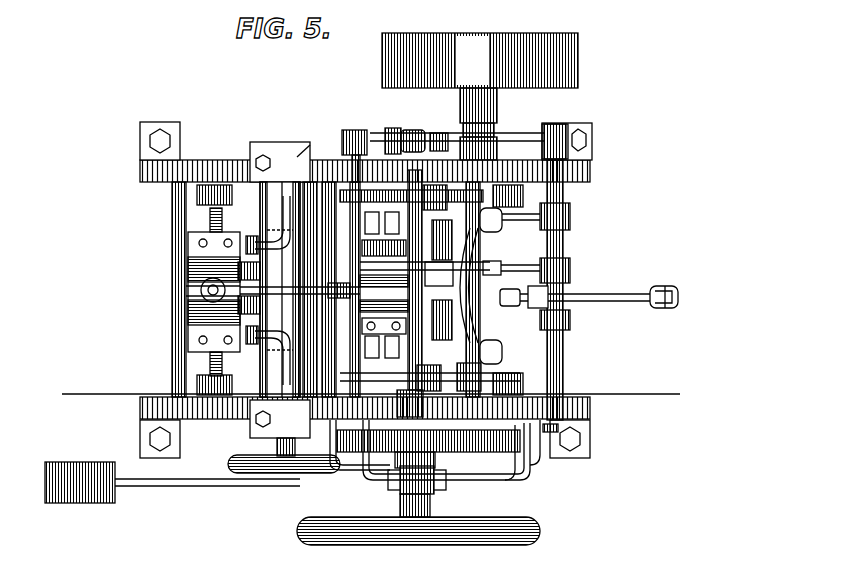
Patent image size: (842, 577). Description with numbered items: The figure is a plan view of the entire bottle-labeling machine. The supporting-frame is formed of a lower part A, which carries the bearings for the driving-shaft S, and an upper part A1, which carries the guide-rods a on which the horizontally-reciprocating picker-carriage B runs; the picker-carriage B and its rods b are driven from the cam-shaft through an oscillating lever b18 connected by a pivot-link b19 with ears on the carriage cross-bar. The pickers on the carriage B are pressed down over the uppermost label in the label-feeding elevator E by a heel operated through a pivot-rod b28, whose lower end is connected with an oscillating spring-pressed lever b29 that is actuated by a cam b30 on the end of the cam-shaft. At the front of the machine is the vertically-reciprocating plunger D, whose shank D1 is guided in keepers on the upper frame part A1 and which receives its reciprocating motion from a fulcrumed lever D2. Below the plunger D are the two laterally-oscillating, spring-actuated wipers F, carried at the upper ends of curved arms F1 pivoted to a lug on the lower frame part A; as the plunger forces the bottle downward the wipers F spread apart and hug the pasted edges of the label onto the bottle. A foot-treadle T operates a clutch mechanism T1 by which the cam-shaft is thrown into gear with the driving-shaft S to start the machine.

The lower part of supporting-frame A is at (590, 423).
The upper part of supporting-frame A1 is at (310, 134).
The guide-rods a is at (200, 192).
The rod b is at (435, 184).
The pivot-rod b28 is at (396, 140).
The cam b30 is at (446, 140).
The oscillating spring-pressed lever b29 is at (514, 134).
The pivot-link b19 is at (606, 294).
The oscillating lever b18 is at (680, 295).
The wipers F is at (188, 253).
The curved arms F1 is at (212, 220).
The plunger D is at (205, 288).
The plunger shank D1 is at (200, 292).
The fulcrumed lever D2 is at (300, 282).
The label-feeding mechanism or elevator E is at (312, 252).
The driving-shaft S is at (472, 318).
The picker-carriage B is at (462, 232).
The foot-treadle T is at (74, 482).
The clutch mechanism T1 is at (438, 480).